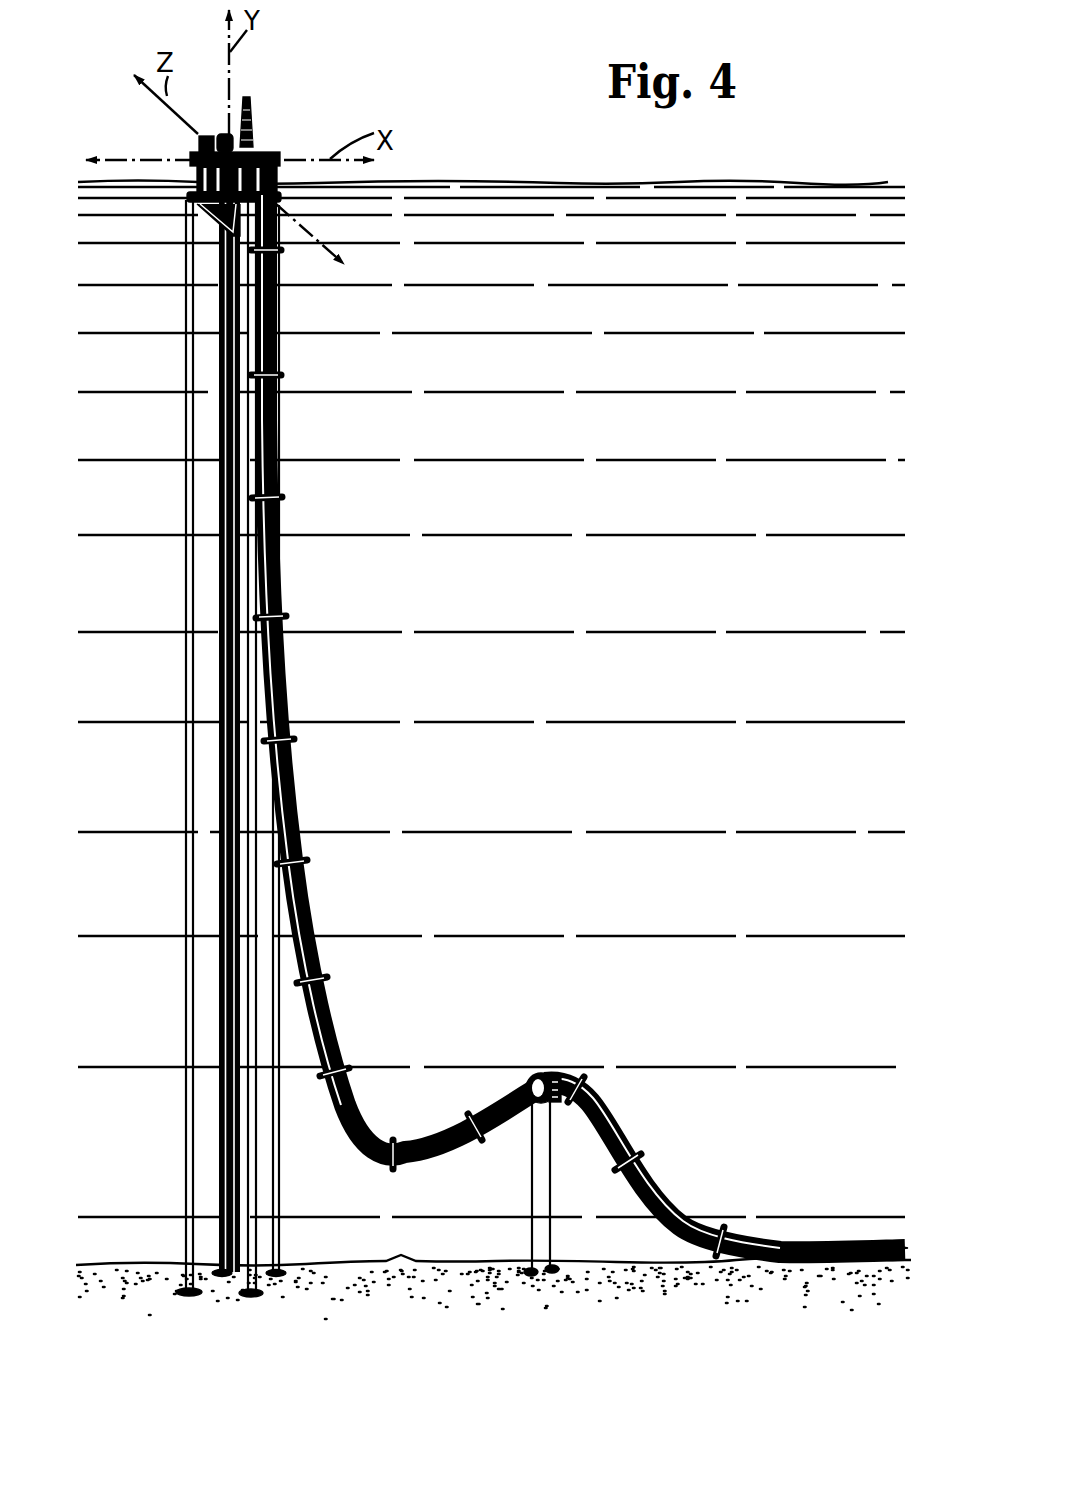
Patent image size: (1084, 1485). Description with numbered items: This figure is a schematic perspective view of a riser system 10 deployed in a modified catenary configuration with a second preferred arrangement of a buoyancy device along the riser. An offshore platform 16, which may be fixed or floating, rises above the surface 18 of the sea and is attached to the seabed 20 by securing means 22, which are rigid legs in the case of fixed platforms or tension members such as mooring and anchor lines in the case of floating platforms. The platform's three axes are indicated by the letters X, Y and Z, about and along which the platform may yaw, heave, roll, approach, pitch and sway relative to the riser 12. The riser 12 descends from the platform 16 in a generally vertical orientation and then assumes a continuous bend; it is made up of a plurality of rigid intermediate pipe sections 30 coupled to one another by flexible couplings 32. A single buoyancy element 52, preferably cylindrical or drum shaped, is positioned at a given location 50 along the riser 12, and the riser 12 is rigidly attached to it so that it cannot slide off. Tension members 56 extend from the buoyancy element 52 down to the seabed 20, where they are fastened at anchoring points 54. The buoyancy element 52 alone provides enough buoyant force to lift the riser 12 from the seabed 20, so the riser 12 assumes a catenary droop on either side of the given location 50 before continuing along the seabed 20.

The riser system 10 is at (430, 1023).
The riser 12 is at (579, 725).
The offshore platform 16 is at (262, 147).
The surface of the sea 18 is at (612, 188).
The seabed 20 is at (448, 1262).
The securing means 22 is at (253, 1140).
The intermediate pipe sections 30 is at (313, 921).
The flexible couplings 32 is at (328, 977).
The given location 50 is at (541, 1073).
The buoyancy element 52 is at (556, 1074).
The anchoring points 54 is at (553, 1273).
The tension members 56 is at (550, 1180).